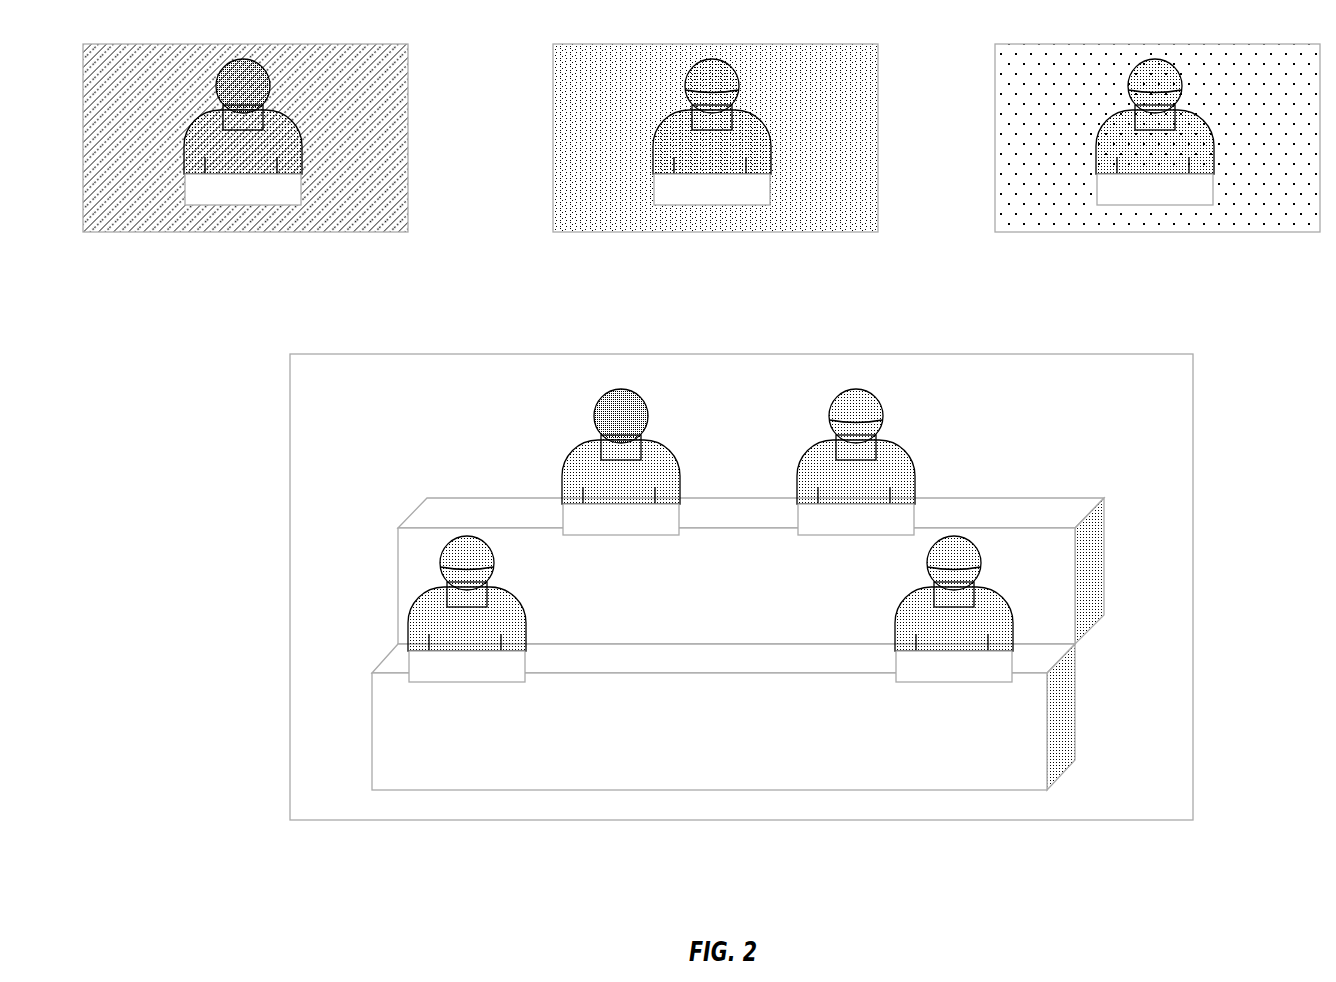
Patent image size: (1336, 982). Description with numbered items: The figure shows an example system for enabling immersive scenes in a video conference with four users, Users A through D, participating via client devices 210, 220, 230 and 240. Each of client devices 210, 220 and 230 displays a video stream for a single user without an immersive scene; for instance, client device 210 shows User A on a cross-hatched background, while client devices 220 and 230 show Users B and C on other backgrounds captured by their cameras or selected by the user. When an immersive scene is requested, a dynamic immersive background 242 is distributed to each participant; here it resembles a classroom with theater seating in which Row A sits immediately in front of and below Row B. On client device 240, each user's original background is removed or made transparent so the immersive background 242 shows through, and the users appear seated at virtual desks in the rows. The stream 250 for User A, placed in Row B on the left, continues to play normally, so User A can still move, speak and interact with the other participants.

The client device 210 is at (245, 173).
The client device 220 is at (715, 173).
The client device 230 is at (1157, 173).
The client device 240 is at (679, 626).
The dynamic immersive background 242 is at (275, 533).
The stream 250 is at (548, 446).